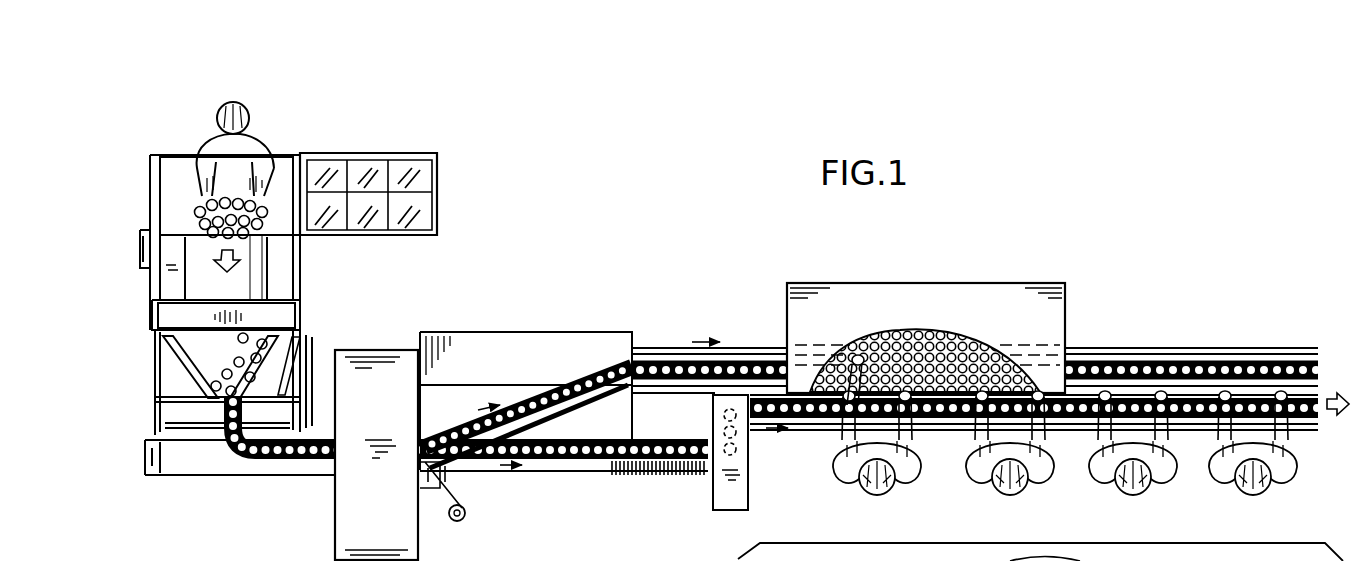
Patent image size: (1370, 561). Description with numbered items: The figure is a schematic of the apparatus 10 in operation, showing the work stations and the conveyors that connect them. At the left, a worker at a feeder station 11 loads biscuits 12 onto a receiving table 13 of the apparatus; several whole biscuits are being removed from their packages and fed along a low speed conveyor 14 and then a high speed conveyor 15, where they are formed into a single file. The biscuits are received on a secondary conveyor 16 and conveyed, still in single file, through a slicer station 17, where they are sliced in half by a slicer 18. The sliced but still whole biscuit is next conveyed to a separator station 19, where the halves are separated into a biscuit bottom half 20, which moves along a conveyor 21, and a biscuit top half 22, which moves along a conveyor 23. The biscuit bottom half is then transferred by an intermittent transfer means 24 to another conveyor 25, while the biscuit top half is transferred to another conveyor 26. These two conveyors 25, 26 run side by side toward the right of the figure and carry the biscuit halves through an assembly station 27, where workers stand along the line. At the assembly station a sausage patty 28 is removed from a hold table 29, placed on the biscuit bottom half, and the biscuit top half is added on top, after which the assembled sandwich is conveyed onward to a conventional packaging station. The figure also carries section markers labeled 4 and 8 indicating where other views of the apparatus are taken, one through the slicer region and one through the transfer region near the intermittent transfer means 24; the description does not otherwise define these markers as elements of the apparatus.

The section line for FIG. 4 is at (335, 345).
The section line for FIG. 8 is at (705, 540).
The apparatus 10 is at (615, 272).
The feeder station 11 is at (136, 309).
The biscuits 12 is at (193, 222).
The receiving table 13 is at (195, 187).
The low speed conveyor 14 is at (215, 267).
The high speed conveyor 15 is at (226, 362).
The secondary conveyor 16 is at (275, 462).
The slicer station 17 is at (316, 537).
The slicer 18 is at (353, 494).
The separator station 19 is at (528, 486).
The biscuit bottom half 20 is at (612, 472).
The conveyor 21 is at (557, 462).
The biscuit top half 22 is at (532, 415).
The conveyor 23 is at (478, 418).
The intermittent transfer means 24 is at (712, 483).
The conveyor 25 is at (818, 432).
The conveyor 26 is at (757, 353).
The assembly station 27 is at (1178, 362).
The sausage patty 28 is at (912, 336).
The hold table 29 is at (1017, 322).